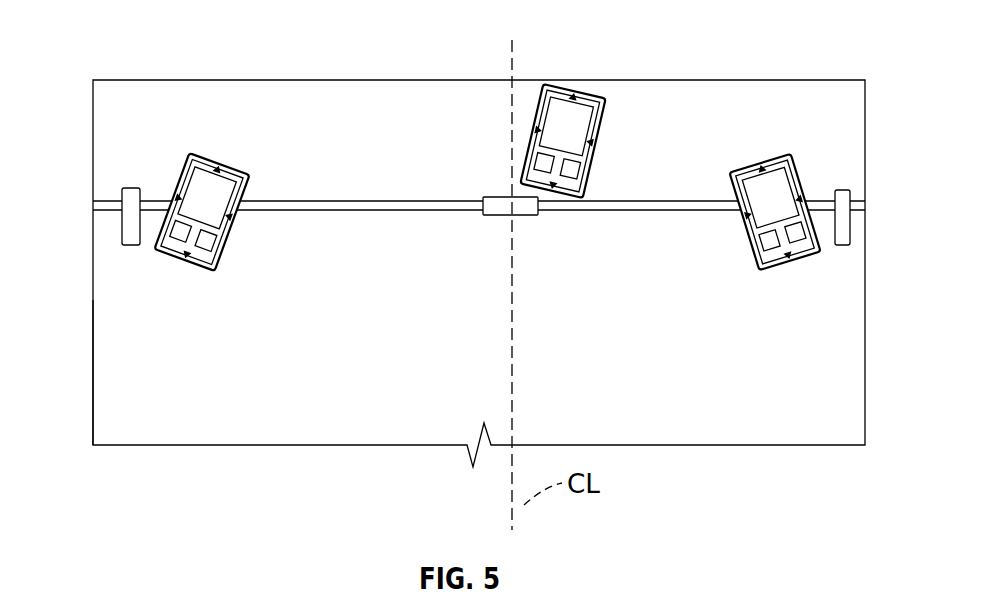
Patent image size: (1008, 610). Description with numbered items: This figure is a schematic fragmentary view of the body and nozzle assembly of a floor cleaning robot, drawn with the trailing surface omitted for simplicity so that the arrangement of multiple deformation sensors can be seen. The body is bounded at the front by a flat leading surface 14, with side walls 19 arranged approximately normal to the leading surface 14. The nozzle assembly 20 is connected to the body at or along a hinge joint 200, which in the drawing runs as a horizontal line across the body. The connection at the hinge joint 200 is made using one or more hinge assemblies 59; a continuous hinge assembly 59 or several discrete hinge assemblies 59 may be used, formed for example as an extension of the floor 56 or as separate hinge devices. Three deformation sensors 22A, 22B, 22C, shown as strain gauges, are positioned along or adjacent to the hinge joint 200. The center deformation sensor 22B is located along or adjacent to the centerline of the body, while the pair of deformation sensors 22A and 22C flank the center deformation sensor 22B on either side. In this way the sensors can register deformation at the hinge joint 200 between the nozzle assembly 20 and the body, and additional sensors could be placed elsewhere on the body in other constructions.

The leading surface 14 is at (360, 80).
The side walls 19 is at (93, 363).
The nozzle assembly 20 is at (420, 154).
The floor 56 is at (354, 284).
The hinge joint 200 is at (93, 203).
The deformation sensor 22A is at (207, 158).
The center deformation sensor 22B is at (591, 95).
The deformation sensor 22C is at (766, 158).
The hinge assembly 59 is at (123, 200).